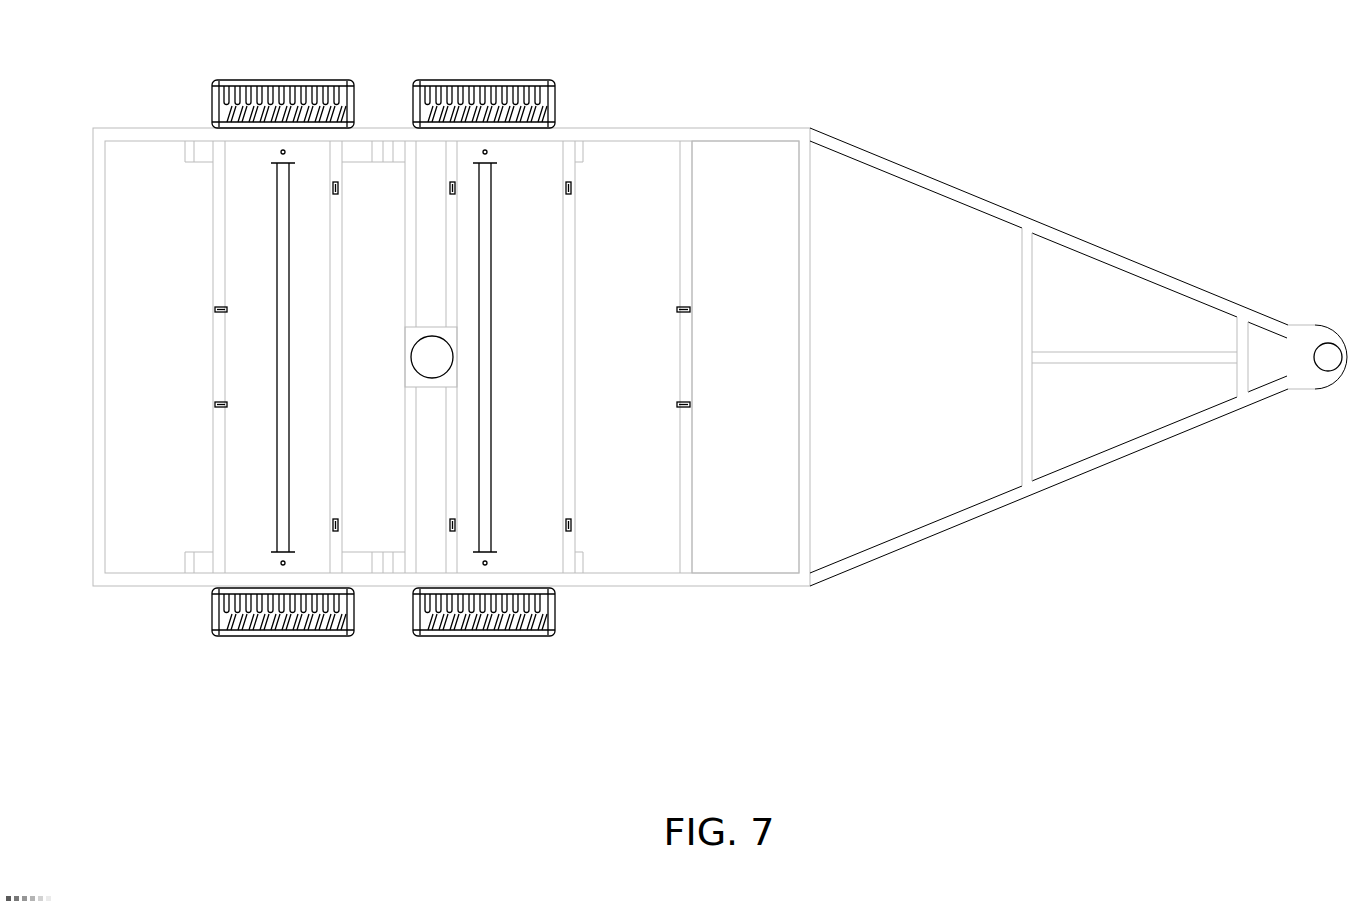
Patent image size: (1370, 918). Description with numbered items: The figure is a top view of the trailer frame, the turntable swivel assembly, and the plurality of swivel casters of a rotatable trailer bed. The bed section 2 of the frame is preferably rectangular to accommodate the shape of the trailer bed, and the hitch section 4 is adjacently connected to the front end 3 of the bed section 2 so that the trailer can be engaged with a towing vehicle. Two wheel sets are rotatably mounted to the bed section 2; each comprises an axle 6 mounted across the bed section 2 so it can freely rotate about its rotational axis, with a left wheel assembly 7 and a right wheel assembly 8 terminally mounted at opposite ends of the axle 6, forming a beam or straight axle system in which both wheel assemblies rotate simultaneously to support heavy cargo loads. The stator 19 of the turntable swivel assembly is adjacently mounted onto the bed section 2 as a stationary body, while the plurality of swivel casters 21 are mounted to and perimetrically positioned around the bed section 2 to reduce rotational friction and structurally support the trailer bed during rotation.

The bed section 2 is at (712, 134).
The front end 3 is at (826, 344).
The hitch section 4 is at (963, 195).
The axle 6 is at (277, 228).
The left wheel assembly 7 is at (310, 80).
The right wheel assembly 8 is at (305, 638).
The stator 19 is at (453, 357).
The swivel casters 21 is at (341, 190).